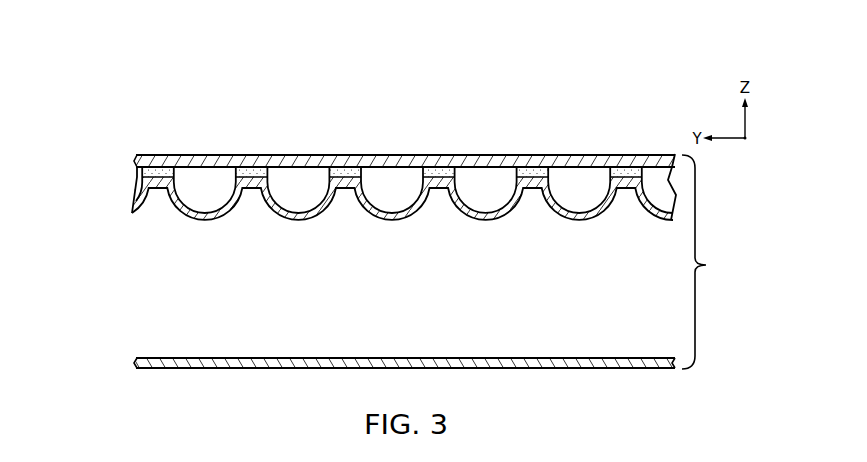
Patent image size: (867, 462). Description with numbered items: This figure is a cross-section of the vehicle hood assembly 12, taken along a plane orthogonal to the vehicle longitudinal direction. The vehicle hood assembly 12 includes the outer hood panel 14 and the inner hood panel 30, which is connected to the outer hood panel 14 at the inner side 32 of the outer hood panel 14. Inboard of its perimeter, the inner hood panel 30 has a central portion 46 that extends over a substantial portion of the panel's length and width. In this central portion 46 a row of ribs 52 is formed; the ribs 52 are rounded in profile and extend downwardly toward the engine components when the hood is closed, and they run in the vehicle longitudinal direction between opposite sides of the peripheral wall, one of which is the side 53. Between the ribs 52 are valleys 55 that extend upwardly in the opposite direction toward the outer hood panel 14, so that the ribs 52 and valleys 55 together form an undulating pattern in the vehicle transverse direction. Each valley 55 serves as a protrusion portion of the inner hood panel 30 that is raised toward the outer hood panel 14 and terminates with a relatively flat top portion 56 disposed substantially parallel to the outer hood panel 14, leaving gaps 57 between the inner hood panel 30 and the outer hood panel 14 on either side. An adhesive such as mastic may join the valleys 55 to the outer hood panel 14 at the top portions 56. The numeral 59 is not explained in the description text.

The vehicle hood assembly 12 is at (541, 104).
The outer hood panel 14 is at (452, 153).
The inner hood panel 30 is at (118, 221).
The inner side 32 is at (299, 172).
The central portion 46 is at (507, 244).
The ribs 52 is at (298, 221).
The side of the peripheral wall 53 is at (125, 348).
The valleys 55 is at (156, 190).
The top portion 56 is at (157, 172).
The gaps 57 is at (130, 183).
The spacer block 59 is at (345, 172).